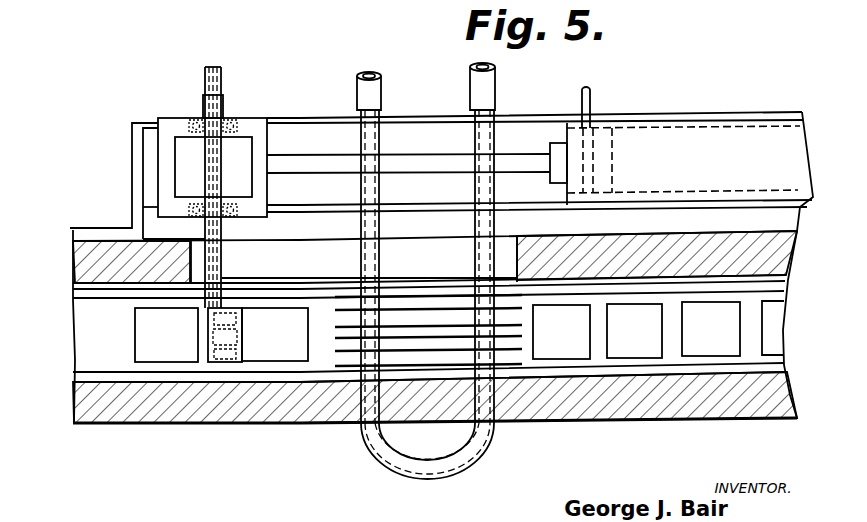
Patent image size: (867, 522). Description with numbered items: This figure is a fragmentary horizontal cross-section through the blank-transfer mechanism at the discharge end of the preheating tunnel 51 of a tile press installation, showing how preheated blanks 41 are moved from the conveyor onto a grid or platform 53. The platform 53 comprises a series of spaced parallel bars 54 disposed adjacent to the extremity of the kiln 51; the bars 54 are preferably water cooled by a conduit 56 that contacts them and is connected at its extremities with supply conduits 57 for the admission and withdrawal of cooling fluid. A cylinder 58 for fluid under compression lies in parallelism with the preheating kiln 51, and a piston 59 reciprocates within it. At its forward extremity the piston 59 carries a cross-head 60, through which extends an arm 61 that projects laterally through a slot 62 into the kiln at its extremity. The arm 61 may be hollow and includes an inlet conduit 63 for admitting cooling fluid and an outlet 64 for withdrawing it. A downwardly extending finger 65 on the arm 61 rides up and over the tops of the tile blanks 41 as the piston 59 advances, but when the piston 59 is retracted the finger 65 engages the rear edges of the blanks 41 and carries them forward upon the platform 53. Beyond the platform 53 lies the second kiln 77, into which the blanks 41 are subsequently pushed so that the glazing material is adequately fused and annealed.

The blanks 41 is at (177, 347).
The preheating tunnel 51 is at (100, 255).
The grid or platform 53 is at (345, 367).
The spaced parallel bars 54 is at (422, 365).
The conduit 56 is at (380, 141).
The supply conduits 57 is at (476, 84).
The cylinder 58 is at (658, 128).
The piston 59 is at (506, 160).
The cross-head 60 is at (235, 148).
The arm 61 is at (223, 105).
The slot 62 is at (326, 270).
The inlet conduit 63 is at (204, 72).
The outlet 64 is at (214, 72).
The finger 65 is at (223, 363).
The second kiln 77 is at (773, 252).